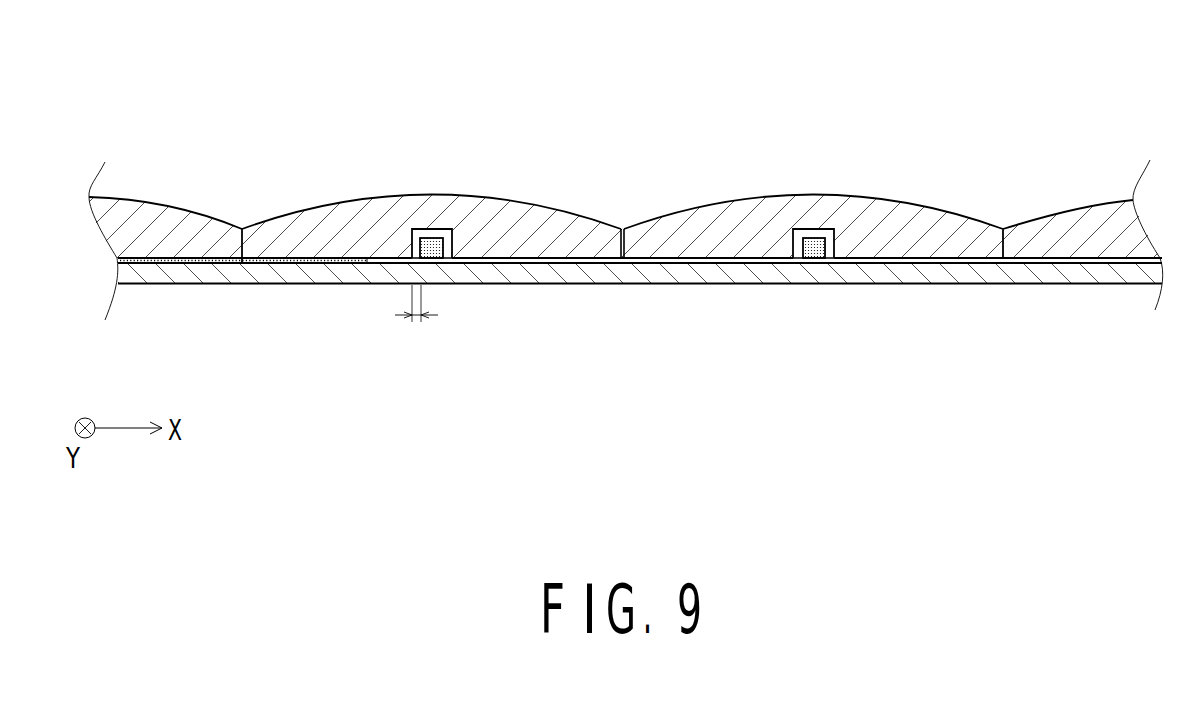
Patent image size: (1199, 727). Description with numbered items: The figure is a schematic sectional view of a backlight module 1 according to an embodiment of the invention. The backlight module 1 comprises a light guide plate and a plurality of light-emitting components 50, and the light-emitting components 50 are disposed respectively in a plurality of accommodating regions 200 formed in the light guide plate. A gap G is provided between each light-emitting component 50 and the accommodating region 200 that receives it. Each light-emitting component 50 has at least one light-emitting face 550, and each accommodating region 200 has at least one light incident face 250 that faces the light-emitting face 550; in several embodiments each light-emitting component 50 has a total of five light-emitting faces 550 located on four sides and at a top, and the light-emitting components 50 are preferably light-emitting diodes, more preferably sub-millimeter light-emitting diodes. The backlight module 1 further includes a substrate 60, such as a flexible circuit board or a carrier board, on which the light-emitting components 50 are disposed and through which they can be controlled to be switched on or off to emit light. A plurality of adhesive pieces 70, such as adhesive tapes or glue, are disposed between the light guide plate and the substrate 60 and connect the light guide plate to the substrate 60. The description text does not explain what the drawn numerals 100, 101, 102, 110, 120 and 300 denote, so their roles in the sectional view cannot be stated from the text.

The backlight module 1 is at (70, 46).
The light-emitting component 50 is at (810, 264).
The substrate 60 is at (223, 275).
The adhesive piece 70 is at (640, 315).
The optical unit 100 is at (431, 195).
The conductive pattern 101 is at (292, 263).
The curved surface 102 is at (316, 207).
The encapsulation layer 110 is at (571, 260).
The top surface 120 is at (611, 187).
The accommodating region 200 is at (438, 229).
The light incident face 250 is at (841, 247).
The groove 300 is at (627, 221).
The light-emitting face 550 is at (807, 247).
The gap G is at (416, 321).